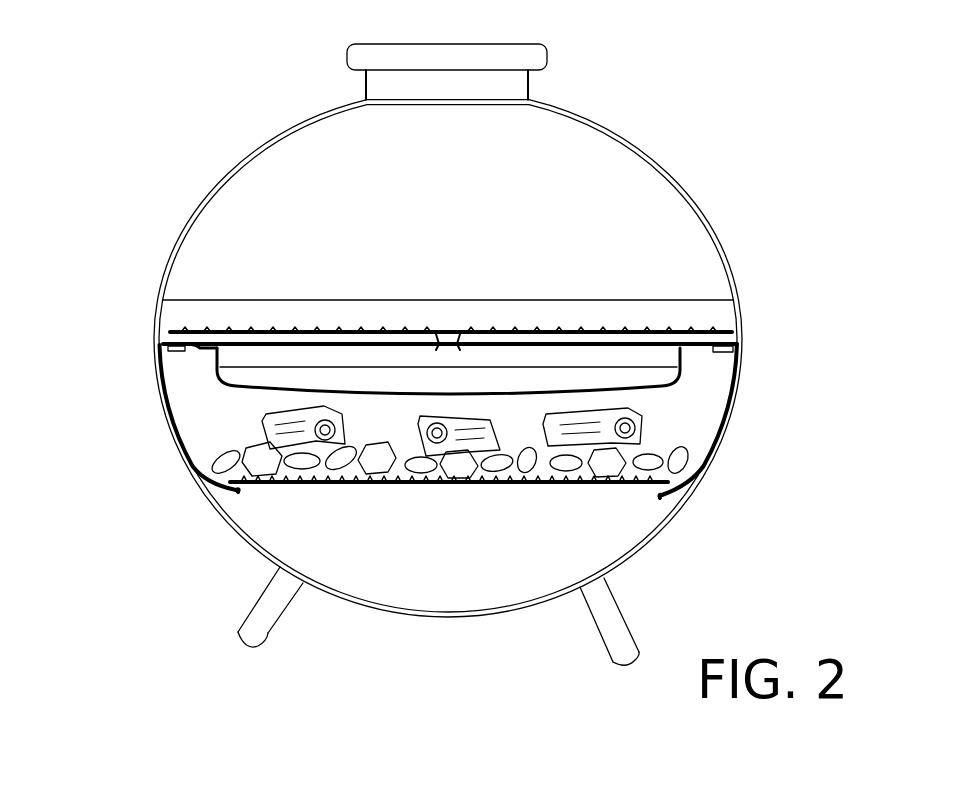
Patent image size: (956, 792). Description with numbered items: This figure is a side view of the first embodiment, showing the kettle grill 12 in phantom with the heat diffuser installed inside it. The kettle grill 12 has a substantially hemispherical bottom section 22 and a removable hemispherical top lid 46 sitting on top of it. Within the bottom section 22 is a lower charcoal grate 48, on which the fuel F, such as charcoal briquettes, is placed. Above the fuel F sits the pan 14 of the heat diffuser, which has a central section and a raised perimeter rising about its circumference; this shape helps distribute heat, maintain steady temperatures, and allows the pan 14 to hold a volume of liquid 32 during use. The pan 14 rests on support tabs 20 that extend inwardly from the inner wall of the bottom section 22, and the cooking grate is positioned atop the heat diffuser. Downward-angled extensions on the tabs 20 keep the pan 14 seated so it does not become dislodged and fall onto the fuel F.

The kettle grill 12 is at (242, 533).
The pan 14 is at (218, 368).
The support tabs 20 is at (180, 332).
The bottom section 22 is at (732, 412).
The liquid 32 is at (635, 372).
The top lid 46 is at (688, 197).
The charcoal grate 48 is at (237, 490).
The fuel F is at (688, 467).